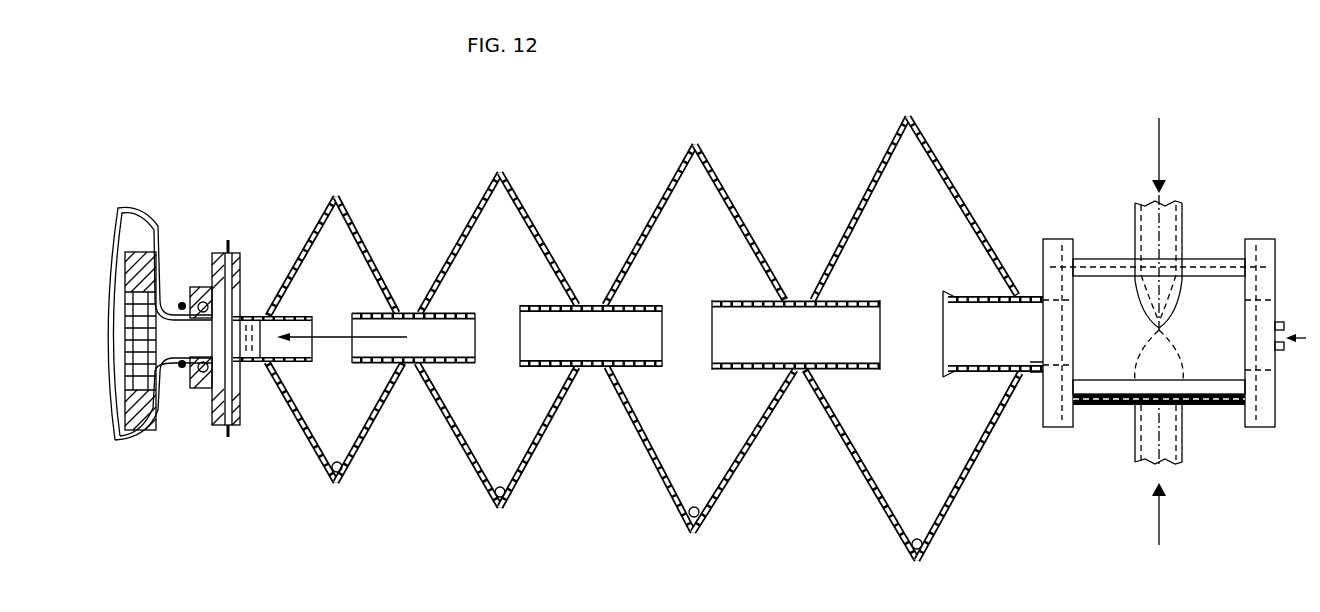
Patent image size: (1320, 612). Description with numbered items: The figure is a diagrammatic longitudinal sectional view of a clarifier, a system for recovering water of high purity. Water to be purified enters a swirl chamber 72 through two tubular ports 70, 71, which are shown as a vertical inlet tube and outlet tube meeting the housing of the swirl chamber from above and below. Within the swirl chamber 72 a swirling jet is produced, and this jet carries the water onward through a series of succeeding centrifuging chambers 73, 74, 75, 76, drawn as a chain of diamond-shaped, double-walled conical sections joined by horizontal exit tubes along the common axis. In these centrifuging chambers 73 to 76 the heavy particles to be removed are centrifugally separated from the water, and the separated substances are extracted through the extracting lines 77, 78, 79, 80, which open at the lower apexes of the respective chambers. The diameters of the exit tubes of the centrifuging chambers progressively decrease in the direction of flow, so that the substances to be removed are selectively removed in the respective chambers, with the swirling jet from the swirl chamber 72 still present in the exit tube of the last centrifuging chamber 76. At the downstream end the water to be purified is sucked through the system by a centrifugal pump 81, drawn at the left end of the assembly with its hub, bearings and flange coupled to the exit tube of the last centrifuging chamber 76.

The tubular port 70 is at (1183, 220).
The tubular port 71 is at (1140, 453).
The swirl chamber 72 is at (1092, 283).
The centrifuging chamber 73 is at (948, 170).
The centrifuging chamber 74 is at (730, 225).
The centrifuging chamber 75 is at (522, 230).
The centrifuging chamber 76 is at (358, 232).
The extracting line 77 is at (912, 550).
The extracting line 78 is at (690, 522).
The extracting line 79 is at (497, 497).
The extracting line 80 is at (330, 474).
The centrifugal pump 81 is at (146, 222).